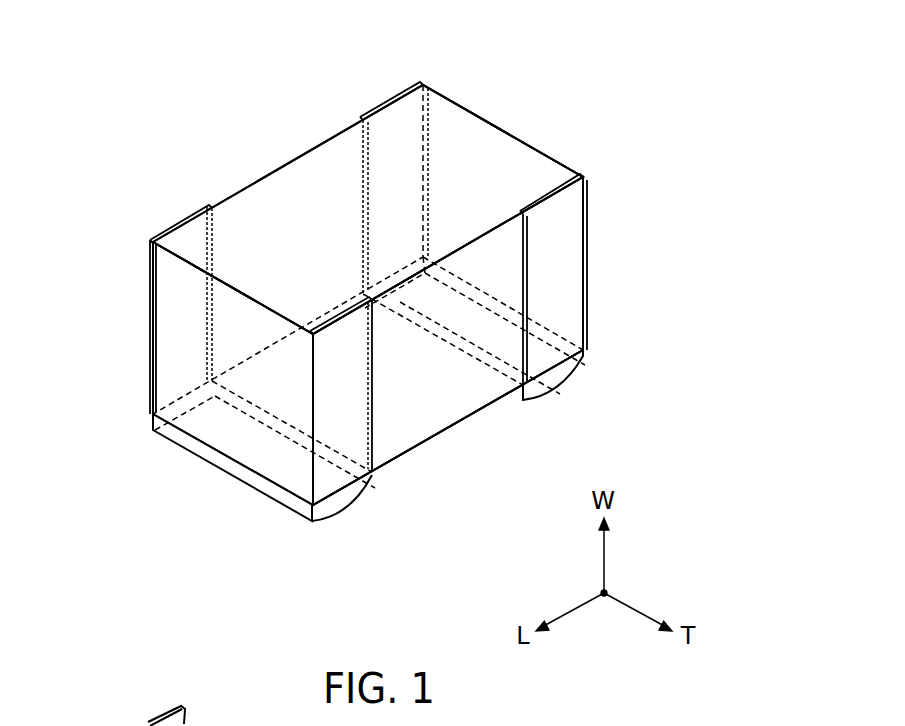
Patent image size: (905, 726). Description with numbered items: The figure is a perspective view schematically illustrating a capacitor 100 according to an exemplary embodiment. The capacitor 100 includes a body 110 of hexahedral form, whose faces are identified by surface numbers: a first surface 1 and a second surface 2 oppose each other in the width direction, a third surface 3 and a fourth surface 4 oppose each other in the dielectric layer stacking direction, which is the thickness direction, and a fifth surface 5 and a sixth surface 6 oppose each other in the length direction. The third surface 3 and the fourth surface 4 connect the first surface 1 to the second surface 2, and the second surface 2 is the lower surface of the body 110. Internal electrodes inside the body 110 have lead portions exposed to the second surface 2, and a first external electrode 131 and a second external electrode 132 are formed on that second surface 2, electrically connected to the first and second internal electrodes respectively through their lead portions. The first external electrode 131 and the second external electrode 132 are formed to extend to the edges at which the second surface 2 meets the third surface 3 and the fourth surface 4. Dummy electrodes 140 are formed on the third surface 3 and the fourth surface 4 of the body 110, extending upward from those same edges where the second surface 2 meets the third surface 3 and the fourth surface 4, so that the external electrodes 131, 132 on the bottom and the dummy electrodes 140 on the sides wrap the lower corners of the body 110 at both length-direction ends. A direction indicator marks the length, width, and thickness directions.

The capacitor 100 is at (538, 73).
The body 110 is at (265, 212).
The first external electrode 131 is at (349, 497).
The second external electrode 132 is at (563, 373).
The dummy electrodes 140 is at (182, 221).
The first surface 1 is at (335, 186).
The second surface 2 is at (402, 388).
The third surface 3 is at (459, 364).
The fourth surface 4 is at (308, 221).
The fifth surface 5 is at (232, 410).
The sixth surface 6 is at (462, 150).